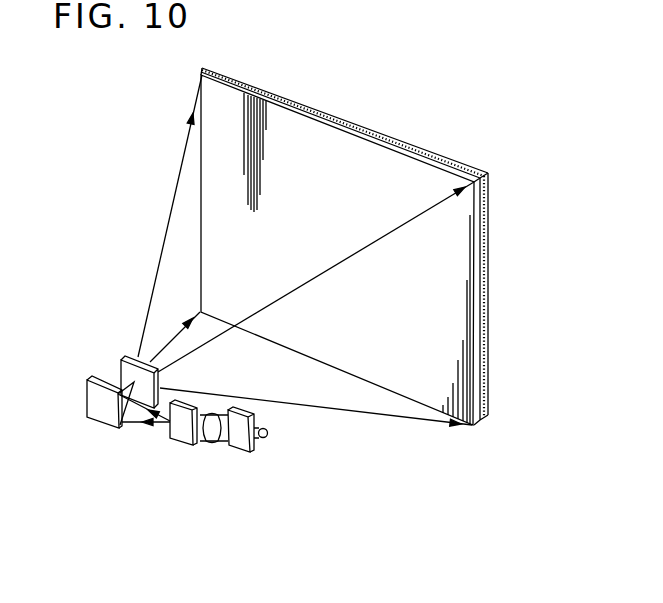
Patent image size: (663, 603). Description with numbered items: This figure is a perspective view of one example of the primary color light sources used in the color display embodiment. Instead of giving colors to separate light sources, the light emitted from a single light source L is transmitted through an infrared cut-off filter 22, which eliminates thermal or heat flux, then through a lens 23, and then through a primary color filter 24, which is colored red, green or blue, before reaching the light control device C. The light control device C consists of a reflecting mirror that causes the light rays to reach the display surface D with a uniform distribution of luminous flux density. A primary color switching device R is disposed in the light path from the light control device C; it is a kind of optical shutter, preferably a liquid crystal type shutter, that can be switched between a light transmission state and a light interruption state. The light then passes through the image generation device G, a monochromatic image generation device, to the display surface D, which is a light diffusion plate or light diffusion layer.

The display surface D is at (344, 246).
The image generation device G is at (340, 129).
The primary color switching device R is at (127, 370).
The light control device C is at (92, 401).
The light source L is at (270, 437).
The infrared cut-off filter 22 is at (244, 452).
The lens 23 is at (210, 442).
The primary color filter 24 is at (178, 440).